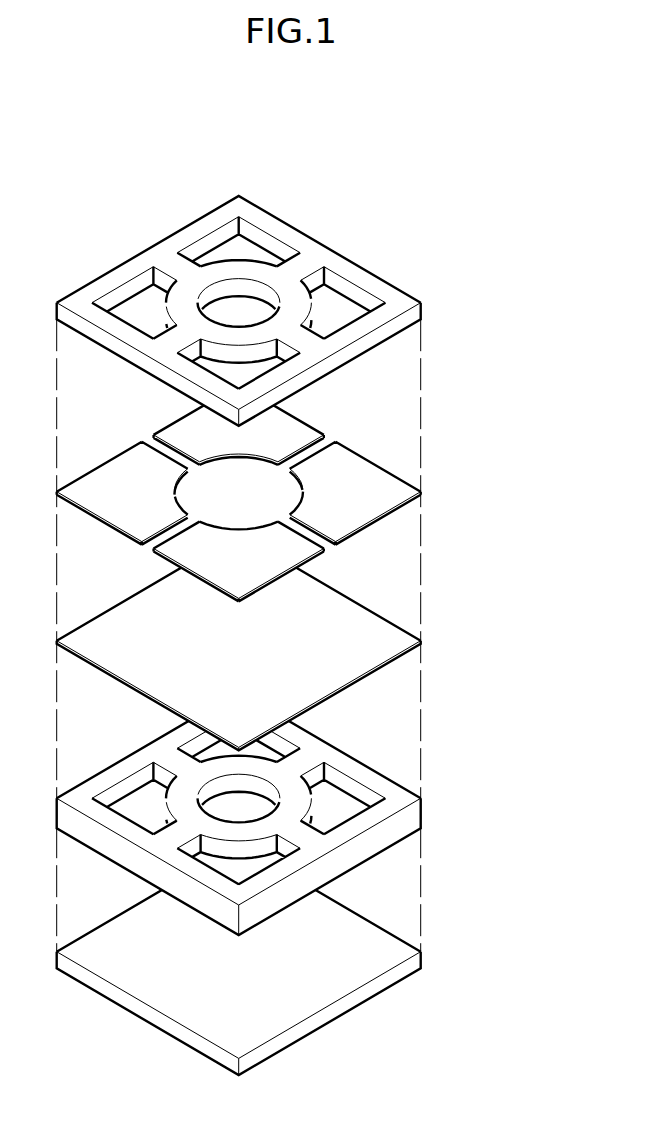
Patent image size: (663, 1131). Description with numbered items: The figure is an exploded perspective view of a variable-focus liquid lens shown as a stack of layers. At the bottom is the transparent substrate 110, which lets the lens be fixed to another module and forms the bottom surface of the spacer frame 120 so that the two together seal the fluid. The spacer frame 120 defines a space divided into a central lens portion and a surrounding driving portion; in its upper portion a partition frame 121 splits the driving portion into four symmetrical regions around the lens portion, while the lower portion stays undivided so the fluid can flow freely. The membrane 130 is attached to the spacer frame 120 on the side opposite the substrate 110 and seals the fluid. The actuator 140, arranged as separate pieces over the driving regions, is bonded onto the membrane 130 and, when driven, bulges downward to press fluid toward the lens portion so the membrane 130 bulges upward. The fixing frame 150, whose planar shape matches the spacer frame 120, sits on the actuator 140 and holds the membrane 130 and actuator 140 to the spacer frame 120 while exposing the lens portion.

The substrate 110 is at (413, 947).
The spacer frame 120 is at (414, 791).
The partition frame 121 is at (280, 775).
The membrane 130 is at (414, 633).
The actuator 140 is at (414, 486).
The fixing frame 150 is at (406, 294).